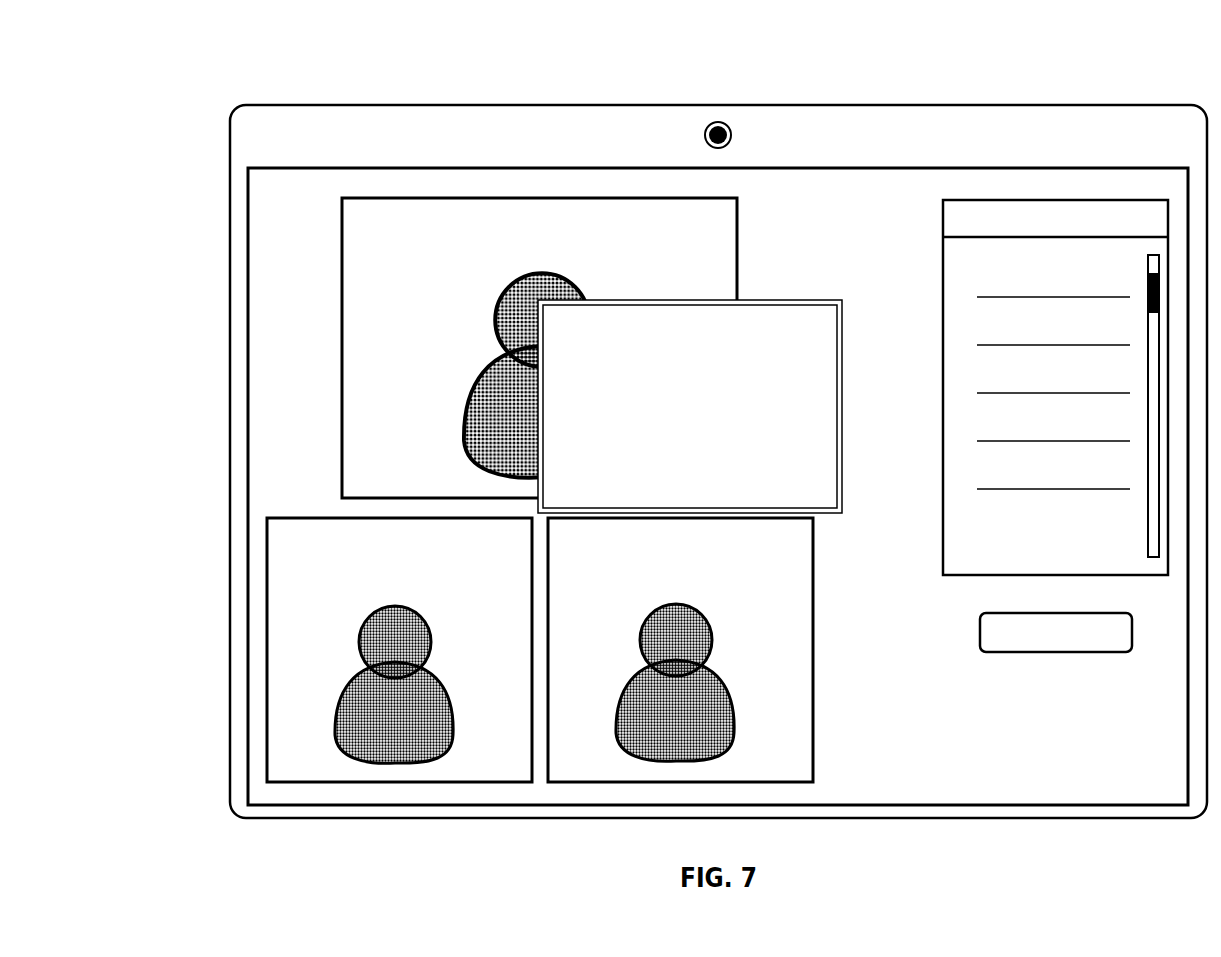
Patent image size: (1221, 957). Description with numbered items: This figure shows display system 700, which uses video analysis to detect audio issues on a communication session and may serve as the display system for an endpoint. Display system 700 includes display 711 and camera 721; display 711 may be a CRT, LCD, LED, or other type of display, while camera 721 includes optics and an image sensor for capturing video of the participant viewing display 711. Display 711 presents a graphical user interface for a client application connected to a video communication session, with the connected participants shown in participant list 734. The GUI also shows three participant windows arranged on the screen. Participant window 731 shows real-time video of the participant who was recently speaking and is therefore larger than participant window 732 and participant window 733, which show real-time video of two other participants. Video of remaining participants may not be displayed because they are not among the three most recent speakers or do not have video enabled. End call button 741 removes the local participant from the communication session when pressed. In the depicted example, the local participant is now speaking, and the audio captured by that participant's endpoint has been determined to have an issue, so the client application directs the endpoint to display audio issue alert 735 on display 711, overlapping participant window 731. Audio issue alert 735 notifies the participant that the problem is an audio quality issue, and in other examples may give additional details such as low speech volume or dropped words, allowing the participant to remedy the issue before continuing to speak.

The display system 700 is at (176, 74).
The display 711 is at (410, 167).
The camera 721 is at (706, 130).
The participant window 731 is at (342, 263).
The participant window 732 is at (314, 517).
The participant window 733 is at (814, 603).
The participant list 734 is at (943, 301).
The audio issue alert 735 is at (780, 299).
The end call button 741 is at (980, 643).